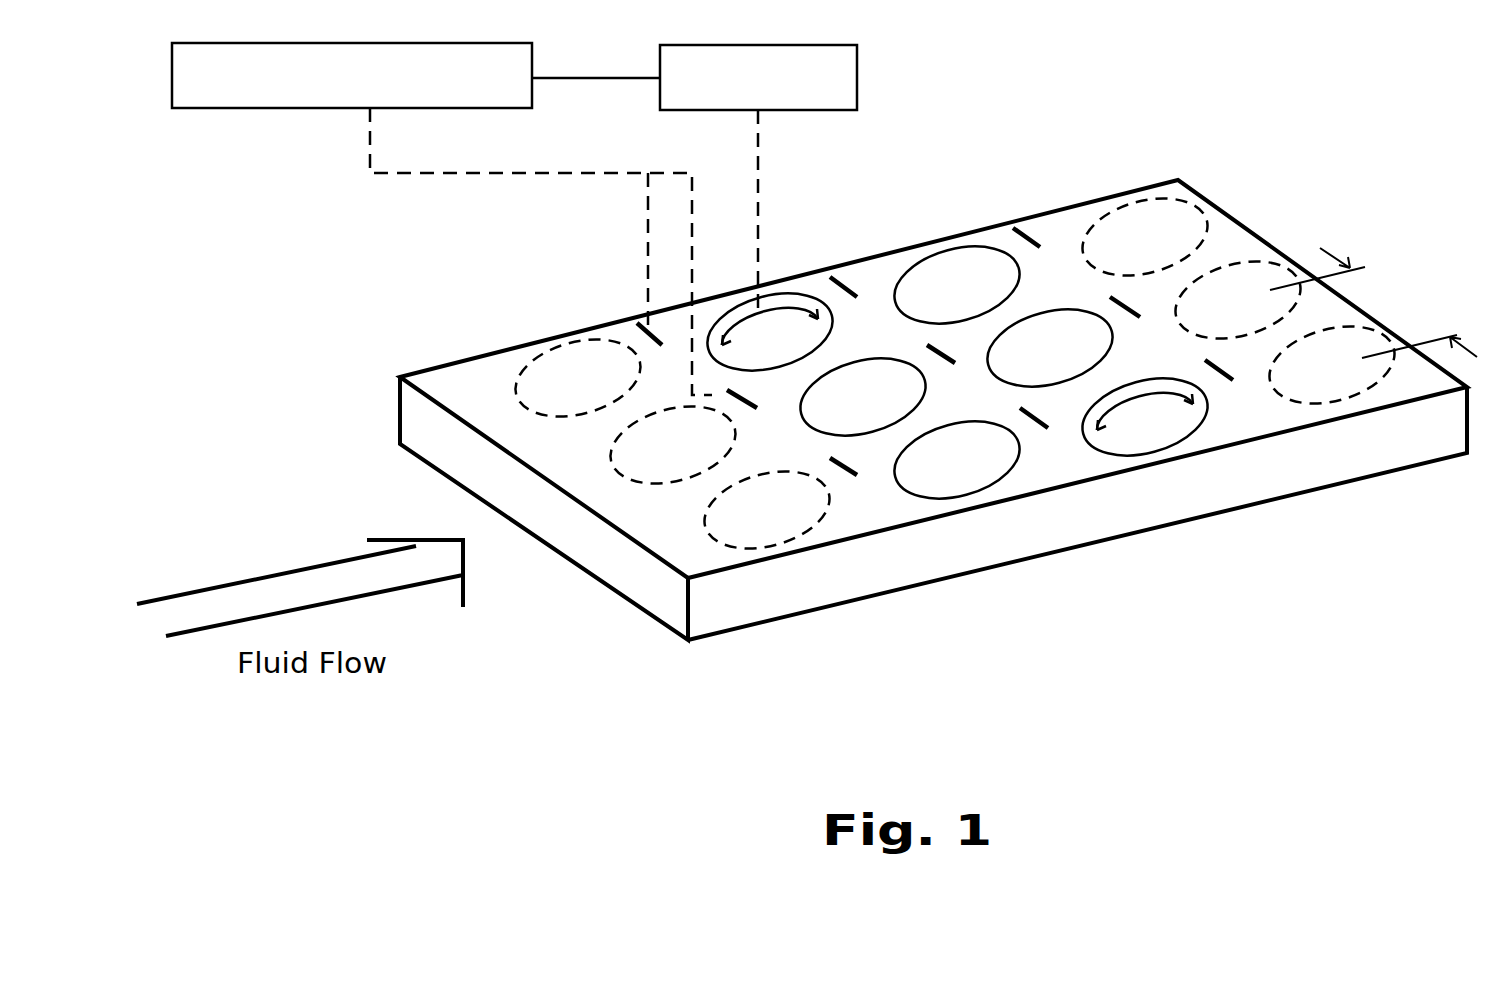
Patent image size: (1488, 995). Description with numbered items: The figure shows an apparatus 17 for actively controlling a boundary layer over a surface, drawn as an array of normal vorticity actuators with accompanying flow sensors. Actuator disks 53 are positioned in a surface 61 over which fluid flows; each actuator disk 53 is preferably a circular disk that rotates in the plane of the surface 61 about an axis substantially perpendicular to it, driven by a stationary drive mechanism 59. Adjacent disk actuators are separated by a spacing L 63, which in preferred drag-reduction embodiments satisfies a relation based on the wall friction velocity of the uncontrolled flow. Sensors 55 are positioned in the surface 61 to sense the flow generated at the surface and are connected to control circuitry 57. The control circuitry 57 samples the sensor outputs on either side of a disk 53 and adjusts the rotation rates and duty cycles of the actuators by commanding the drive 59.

The apparatus 17 is at (1258, 190).
The actuator disk 53 is at (1143, 432).
The sensor 55 is at (847, 477).
The control circuitry 57 is at (442, 219).
The drive mechanism 59 is at (694, 179).
The surface 61 is at (625, 573).
The spacing L 63 is at (1373, 303).